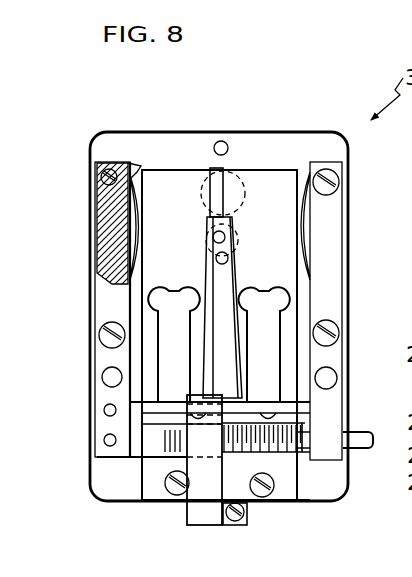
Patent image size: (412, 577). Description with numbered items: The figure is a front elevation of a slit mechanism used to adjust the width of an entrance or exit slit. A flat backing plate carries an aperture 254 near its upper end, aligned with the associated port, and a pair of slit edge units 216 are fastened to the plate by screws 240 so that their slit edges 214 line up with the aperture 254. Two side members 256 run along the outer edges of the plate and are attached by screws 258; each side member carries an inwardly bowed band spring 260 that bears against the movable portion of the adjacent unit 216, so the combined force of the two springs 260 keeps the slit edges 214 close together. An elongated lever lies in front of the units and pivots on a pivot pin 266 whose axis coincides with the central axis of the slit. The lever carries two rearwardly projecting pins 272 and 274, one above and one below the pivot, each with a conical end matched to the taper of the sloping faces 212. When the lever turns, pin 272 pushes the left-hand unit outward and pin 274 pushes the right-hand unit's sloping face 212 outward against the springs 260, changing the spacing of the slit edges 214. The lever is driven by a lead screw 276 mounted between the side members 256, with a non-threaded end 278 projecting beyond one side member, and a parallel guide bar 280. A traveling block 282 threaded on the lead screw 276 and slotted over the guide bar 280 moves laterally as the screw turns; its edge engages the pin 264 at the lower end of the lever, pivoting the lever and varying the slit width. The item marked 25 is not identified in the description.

The housing 25 is at (178, 133).
The sloping face 212 is at (224, 198).
The slit edge 214 is at (225, 185).
The slit edge unit 216 is at (157, 186).
The screw 240 is at (167, 502).
The aperture 254 is at (173, 302).
The side member 256 is at (330, 285).
The screw 258 is at (330, 180).
The bowed band spring 260 is at (305, 232).
The pin 264 is at (243, 525).
The pivot pin 266 is at (216, 259).
The pin 272 is at (245, 238).
The pin 274 is at (227, 283).
The lead screw 276 is at (283, 455).
The non-threaded end 278 is at (358, 434).
The guide bar 280 is at (125, 399).
The traveling block 282 is at (203, 512).